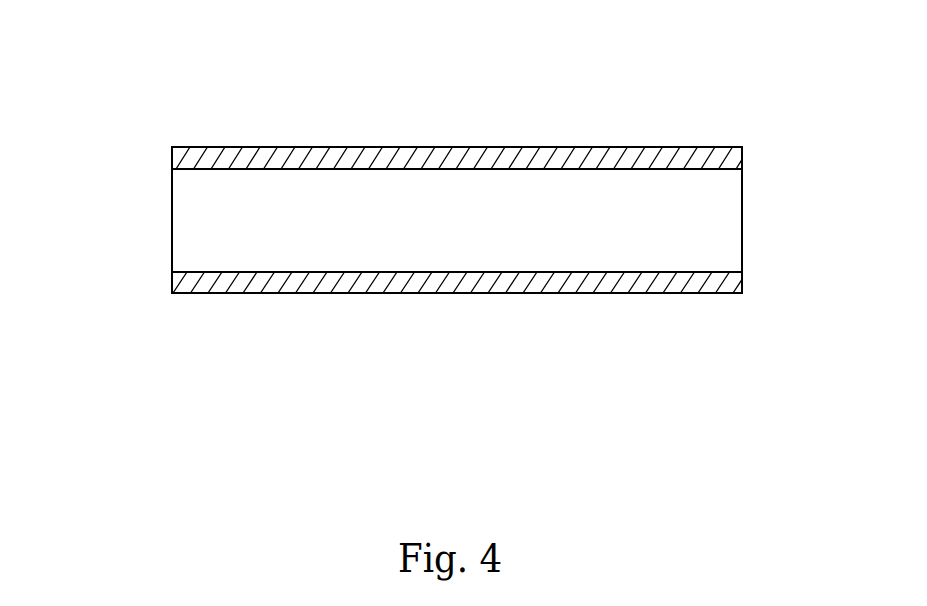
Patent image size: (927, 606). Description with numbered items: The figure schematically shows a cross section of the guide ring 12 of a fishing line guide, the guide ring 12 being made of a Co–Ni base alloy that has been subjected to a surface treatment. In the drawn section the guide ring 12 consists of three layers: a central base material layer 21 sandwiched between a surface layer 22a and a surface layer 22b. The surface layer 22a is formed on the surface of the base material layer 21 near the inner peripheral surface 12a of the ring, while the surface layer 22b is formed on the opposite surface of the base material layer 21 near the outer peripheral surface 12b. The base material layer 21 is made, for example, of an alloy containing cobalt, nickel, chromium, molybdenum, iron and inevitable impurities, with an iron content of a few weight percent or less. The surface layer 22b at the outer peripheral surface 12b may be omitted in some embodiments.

The guide ring 12 is at (136, 117).
The inner peripheral surface 12a is at (695, 147).
The outer peripheral surface 12b is at (695, 293).
The base material layer 21 is at (475, 231).
The surface layer 22a is at (742, 157).
The surface layer 22b is at (742, 283).